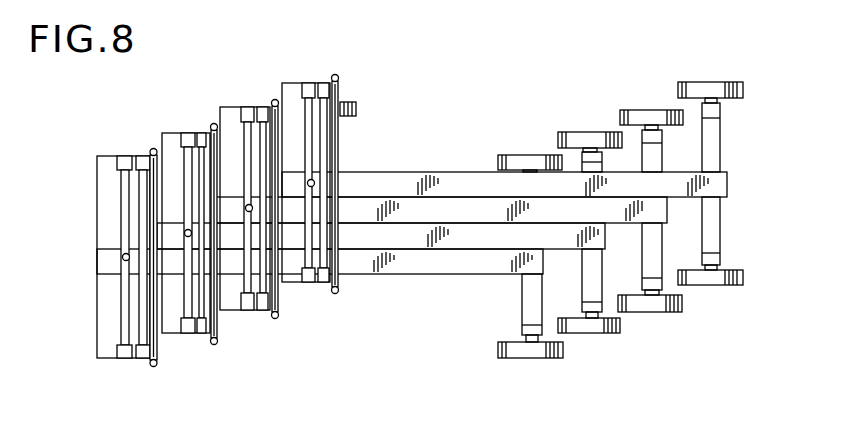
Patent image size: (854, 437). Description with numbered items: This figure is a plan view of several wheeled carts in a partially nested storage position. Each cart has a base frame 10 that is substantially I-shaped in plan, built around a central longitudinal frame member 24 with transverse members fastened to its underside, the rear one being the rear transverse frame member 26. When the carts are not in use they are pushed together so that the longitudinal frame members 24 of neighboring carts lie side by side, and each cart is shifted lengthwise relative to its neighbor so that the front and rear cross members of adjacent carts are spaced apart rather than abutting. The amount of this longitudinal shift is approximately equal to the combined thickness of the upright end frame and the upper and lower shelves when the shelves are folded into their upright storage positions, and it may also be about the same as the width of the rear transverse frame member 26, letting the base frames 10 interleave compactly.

The base frame 10 is at (406, 282).
The central longitudinal frame member 24 is at (416, 232).
The rear transverse frame member 26 is at (105, 330).